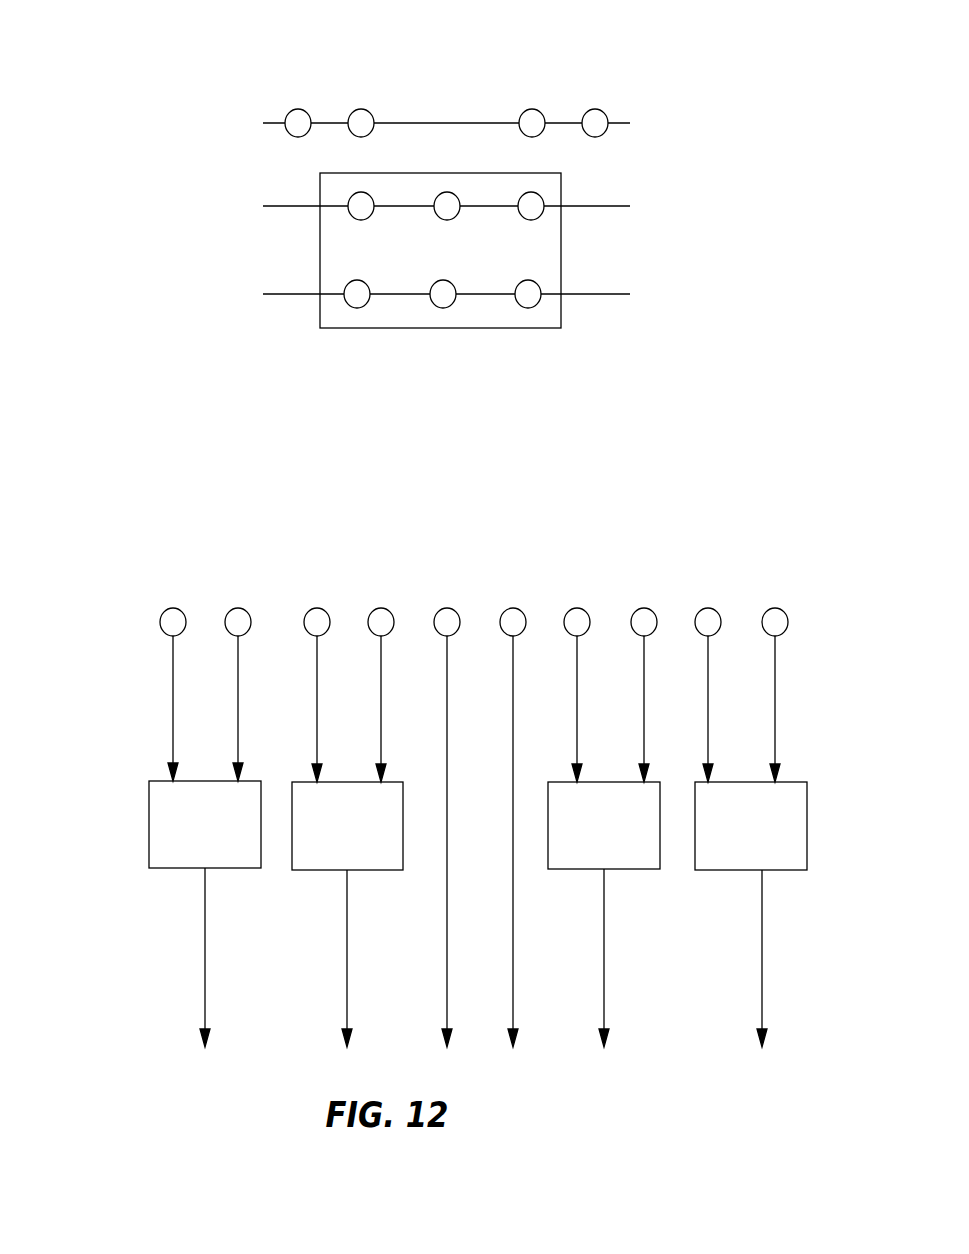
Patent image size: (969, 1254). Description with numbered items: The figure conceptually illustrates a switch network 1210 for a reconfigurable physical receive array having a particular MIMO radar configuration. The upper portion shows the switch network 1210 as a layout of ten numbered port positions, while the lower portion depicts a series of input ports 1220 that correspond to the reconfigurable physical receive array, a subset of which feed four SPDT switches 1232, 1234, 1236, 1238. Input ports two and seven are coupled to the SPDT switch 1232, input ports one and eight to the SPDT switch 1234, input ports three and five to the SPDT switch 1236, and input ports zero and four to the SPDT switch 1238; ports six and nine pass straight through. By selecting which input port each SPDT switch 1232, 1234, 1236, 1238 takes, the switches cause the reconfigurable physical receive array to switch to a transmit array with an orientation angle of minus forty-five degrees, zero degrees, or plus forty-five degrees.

The switch network 1210 is at (330, 66).
The input ports 1220 is at (205, 566).
The SPDT switch 1232 is at (149, 825).
The SPDT switch 1234 is at (292, 870).
The SPDT switch 1236 is at (584, 869).
The SPDT switch 1238 is at (807, 808).